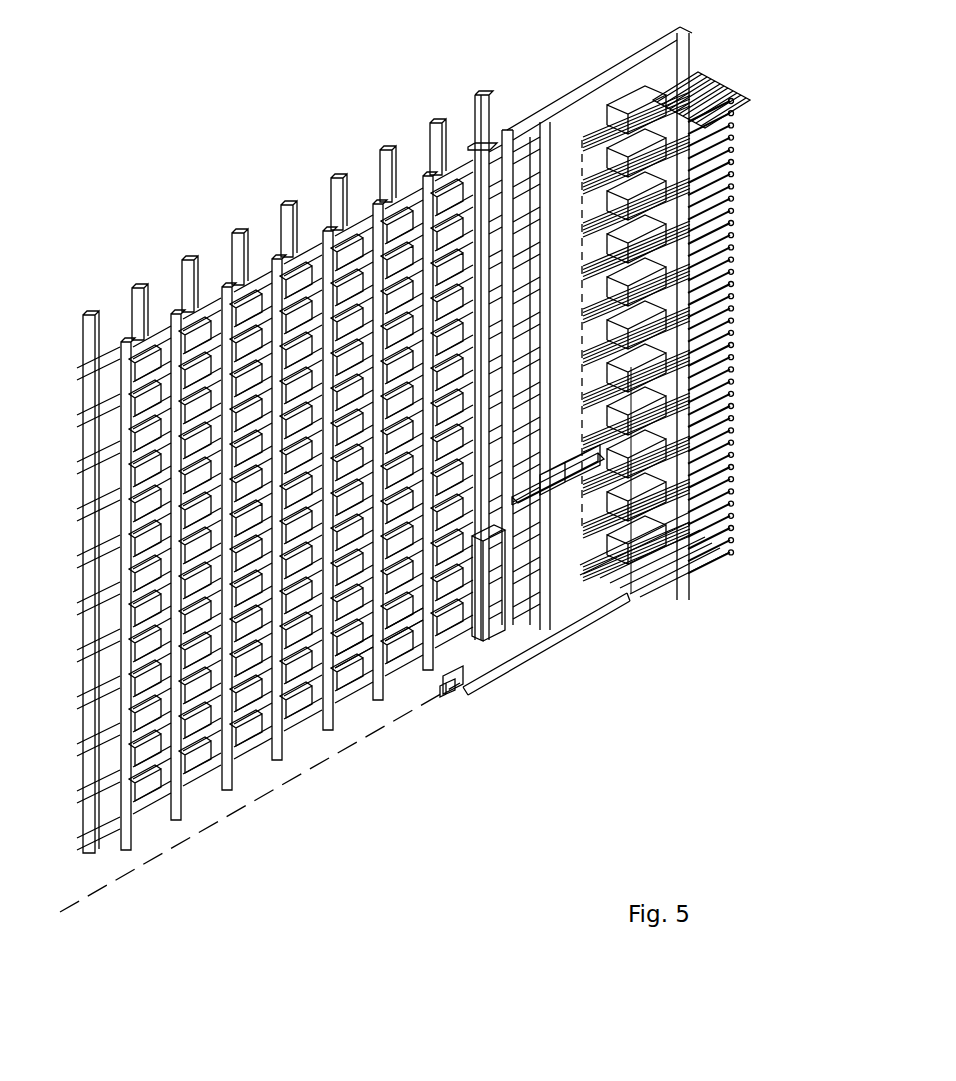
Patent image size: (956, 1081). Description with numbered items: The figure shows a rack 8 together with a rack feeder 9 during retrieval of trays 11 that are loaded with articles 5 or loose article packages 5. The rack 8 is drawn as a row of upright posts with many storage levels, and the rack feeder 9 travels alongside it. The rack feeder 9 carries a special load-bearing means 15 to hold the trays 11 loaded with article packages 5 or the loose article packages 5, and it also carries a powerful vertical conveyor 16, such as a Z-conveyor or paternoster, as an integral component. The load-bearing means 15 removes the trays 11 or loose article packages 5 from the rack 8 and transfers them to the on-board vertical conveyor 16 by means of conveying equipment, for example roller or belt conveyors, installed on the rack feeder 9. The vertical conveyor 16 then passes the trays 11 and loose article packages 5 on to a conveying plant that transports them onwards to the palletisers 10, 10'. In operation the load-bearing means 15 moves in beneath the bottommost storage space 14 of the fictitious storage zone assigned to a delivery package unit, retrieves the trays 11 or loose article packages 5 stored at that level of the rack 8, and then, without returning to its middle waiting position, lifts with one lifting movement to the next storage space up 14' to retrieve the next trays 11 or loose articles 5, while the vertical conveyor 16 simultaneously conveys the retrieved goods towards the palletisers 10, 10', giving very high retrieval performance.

The article packages 5 is at (448, 262).
The rack 8 is at (268, 162).
The rack feeder 9 is at (345, 752).
The palletiser 10 is at (646, 322).
The palletiser 10' is at (754, 307).
The trays 11 is at (397, 625).
The bottommost storage space 14 is at (491, 700).
The next storage space up 14' is at (416, 755).
The load-bearing means 15 is at (548, 515).
The vertical conveyor 16 is at (675, 595).